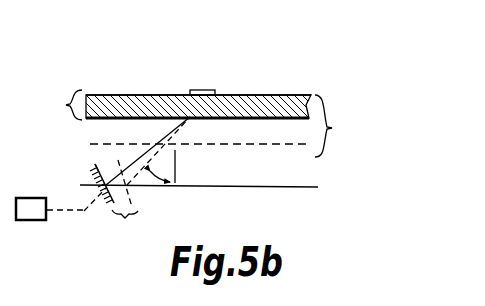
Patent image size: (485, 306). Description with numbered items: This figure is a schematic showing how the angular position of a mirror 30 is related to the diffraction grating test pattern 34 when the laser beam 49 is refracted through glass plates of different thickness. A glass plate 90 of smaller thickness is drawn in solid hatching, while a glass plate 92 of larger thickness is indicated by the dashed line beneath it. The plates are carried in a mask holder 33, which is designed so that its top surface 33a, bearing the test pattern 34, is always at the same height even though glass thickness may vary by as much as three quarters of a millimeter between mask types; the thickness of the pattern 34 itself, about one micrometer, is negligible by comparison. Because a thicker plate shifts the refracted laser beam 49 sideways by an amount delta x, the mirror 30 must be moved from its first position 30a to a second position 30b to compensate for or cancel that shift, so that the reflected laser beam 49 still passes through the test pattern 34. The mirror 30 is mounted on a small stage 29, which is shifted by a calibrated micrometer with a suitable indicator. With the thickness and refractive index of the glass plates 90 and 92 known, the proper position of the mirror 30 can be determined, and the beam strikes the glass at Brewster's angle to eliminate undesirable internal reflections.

The stage 29 is at (40, 197).
The mirror 30 is at (97, 213).
The mirror position 30a is at (103, 166).
The mirror position 30b is at (131, 189).
The mask holder 33 is at (286, 57).
The top surface 33a is at (105, 93).
The test pattern 34 is at (208, 66).
The laser beam 49 is at (252, 189).
The glass plate 90 is at (61, 105).
The glass plate 92 is at (222, 128).